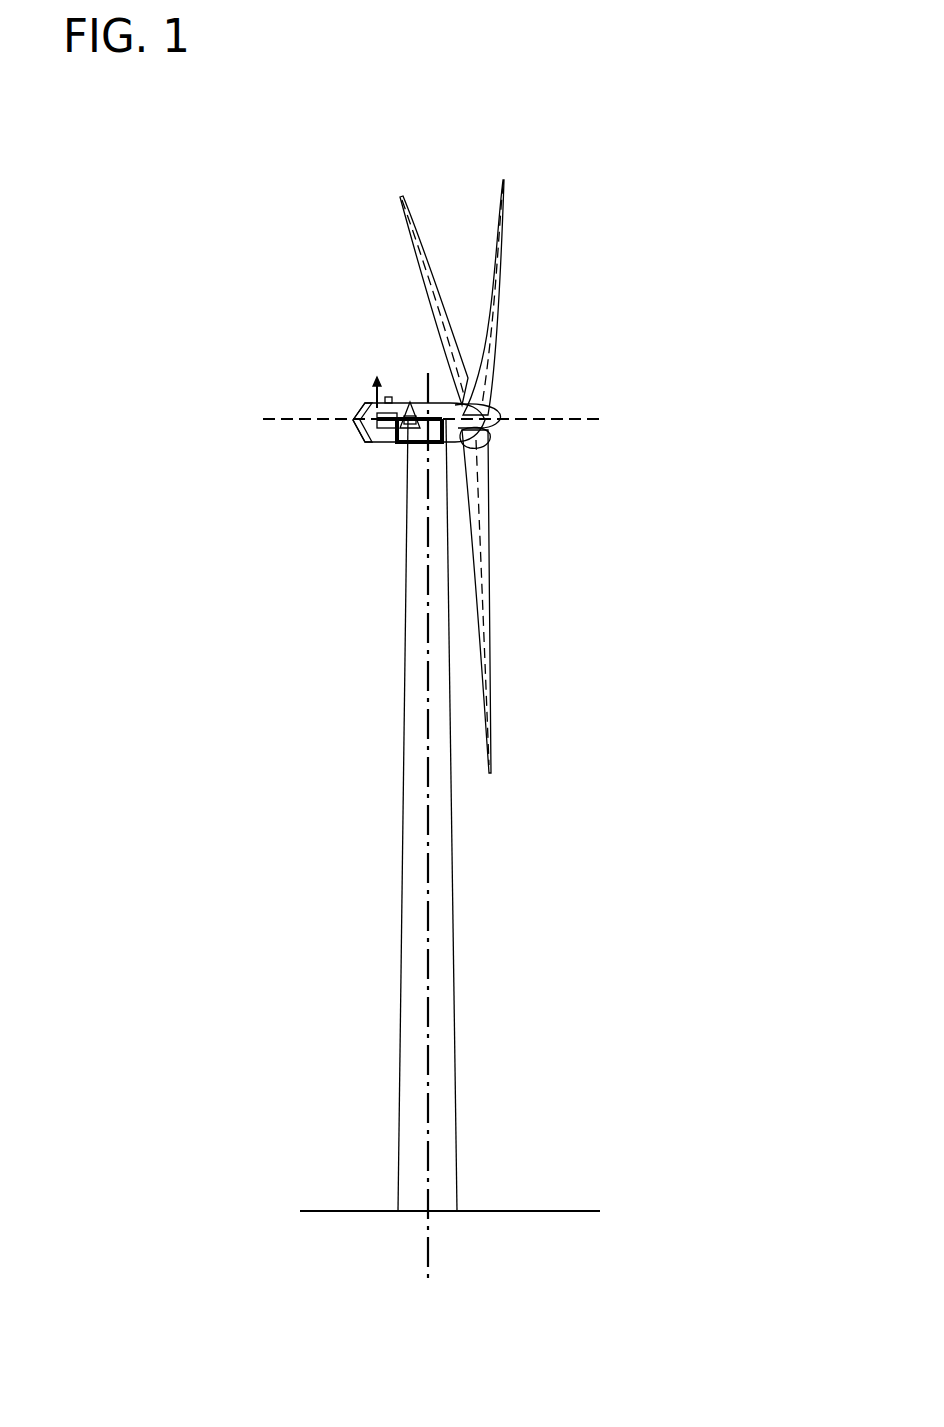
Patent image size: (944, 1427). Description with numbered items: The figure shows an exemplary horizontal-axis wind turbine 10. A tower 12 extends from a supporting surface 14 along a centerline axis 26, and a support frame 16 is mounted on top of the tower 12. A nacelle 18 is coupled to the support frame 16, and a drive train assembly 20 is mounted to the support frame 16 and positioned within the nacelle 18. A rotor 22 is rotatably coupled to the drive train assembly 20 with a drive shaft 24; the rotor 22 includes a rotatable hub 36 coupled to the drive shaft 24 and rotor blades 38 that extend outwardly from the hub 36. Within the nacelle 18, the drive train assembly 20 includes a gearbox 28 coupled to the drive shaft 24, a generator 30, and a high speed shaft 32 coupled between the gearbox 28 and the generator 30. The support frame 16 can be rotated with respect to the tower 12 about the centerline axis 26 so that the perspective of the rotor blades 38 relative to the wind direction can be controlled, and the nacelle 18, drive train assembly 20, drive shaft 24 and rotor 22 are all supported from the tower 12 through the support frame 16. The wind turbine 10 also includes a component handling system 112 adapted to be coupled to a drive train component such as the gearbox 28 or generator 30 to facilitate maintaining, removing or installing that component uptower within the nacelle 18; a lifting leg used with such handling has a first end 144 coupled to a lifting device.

The wind turbine 10 is at (705, 210).
The tower 12 is at (398, 975).
The supporting surface 14 is at (358, 1211).
The support frame 16 is at (385, 442).
The nacelle 18 is at (355, 425).
The drive train assembly 20 is at (366, 403).
The rotor 22 is at (474, 476).
The drive shaft 24 is at (470, 445).
The centerline axis 26 is at (430, 898).
The gearbox 28 is at (400, 445).
The first end 144 is at (352, 484).
The generator 30 is at (395, 405).
The high speed shaft 32 is at (395, 447).
The rotatable hub 36 is at (497, 418).
The rotor blade 38 is at (420, 270).
The component handling system 112 is at (412, 393).